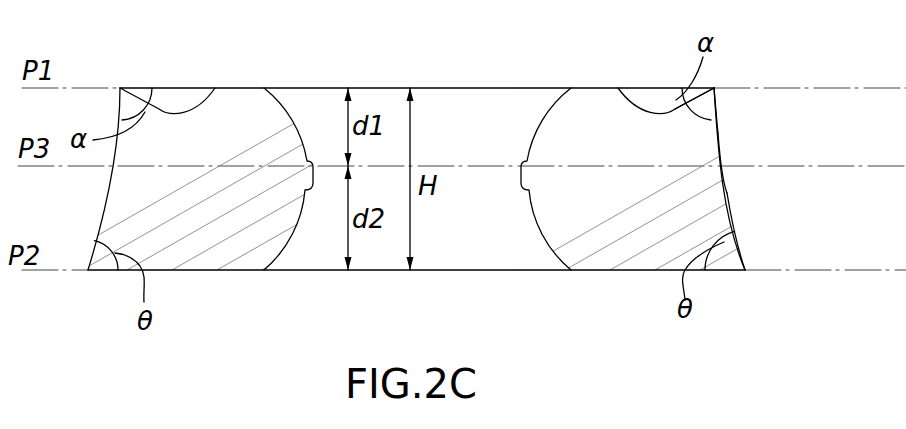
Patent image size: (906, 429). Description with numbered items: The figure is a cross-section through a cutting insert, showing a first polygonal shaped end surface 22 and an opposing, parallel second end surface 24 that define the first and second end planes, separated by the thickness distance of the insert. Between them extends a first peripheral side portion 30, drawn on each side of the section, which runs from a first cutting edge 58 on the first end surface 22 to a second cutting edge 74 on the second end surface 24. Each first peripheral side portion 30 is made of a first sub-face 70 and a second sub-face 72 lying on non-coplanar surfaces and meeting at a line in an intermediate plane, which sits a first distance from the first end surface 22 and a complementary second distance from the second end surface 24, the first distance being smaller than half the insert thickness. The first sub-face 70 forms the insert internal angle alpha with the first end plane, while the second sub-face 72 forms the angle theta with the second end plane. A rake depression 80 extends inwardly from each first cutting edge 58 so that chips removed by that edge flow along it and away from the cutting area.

The first polygonal shaped end surface 22 is at (433, 88).
The second polygonal shaped end surface 24 is at (330, 270).
The first orientation peripheral side portion 30 is at (118, 123).
The first cutting edge 58 is at (714, 88).
The first sub-face 70 is at (718, 133).
The second sub-face 72 is at (727, 193).
The second cutting edge 74 is at (745, 270).
The rake depression 80 is at (179, 97).